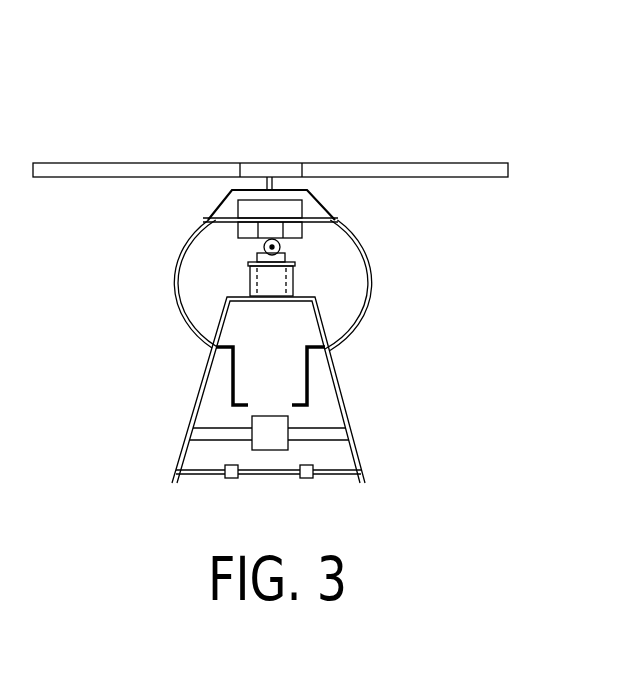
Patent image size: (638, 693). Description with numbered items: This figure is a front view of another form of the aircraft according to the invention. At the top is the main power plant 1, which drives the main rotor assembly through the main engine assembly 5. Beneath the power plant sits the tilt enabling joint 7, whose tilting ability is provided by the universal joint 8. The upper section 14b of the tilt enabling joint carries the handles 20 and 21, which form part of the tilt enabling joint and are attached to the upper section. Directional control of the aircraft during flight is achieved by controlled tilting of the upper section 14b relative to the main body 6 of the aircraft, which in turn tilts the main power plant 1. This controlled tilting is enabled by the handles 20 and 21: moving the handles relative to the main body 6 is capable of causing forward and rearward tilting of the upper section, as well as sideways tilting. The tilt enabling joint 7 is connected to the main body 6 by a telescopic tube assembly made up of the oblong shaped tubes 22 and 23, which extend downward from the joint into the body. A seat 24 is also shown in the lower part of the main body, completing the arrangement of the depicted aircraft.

The main power plant 1 is at (313, 148).
The main engine assembly 5 is at (250, 207).
The main body 6 is at (340, 380).
The tilt enabling joint 7 is at (308, 285).
The universal joint 8 is at (225, 242).
The upper section of the tilt enabling joint 14b is at (228, 218).
The handle 20 is at (372, 287).
The handle 21 is at (177, 270).
The oblong shaped tube 22 is at (288, 257).
The oblong shaped tube 23 is at (268, 278).
The seat 24 is at (270, 423).